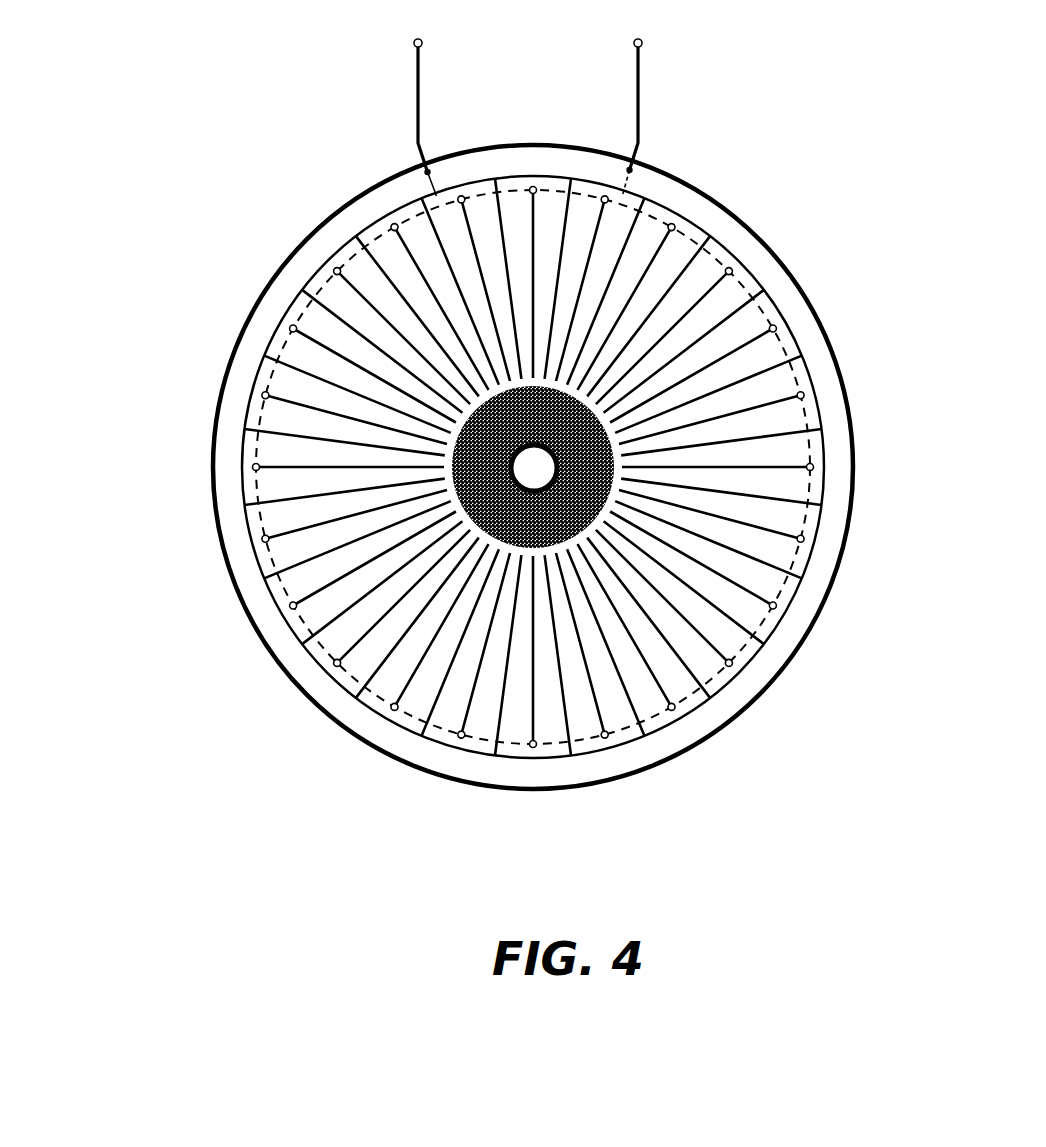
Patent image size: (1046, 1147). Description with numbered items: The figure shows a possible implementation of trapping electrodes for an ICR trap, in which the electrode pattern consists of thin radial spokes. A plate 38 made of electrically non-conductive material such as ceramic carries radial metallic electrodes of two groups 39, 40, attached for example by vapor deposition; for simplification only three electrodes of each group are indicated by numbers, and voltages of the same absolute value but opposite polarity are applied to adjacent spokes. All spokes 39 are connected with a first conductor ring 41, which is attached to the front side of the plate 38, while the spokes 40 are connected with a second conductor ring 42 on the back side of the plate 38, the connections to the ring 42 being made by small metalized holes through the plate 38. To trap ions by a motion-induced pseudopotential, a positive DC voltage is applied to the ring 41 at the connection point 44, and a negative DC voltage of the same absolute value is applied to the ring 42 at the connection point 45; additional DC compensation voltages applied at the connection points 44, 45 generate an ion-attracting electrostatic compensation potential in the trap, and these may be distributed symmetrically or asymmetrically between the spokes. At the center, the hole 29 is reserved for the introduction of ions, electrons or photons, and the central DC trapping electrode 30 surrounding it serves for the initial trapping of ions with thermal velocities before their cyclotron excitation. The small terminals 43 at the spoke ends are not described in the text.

The hole 29 is at (534, 468).
The central DC trapping electrode 30 is at (533, 467).
The plate 38 is at (333, 213).
The spokes of first electrode group 39 is at (275, 497).
The spokes of second electrode group 40 is at (403, 679).
The first conductor ring 41 is at (240, 450).
The second conductor ring 42 is at (258, 522).
The electrode terminals 43 is at (817, 455).
The connection point 44 is at (399, 107).
The connection point 45 is at (656, 107).